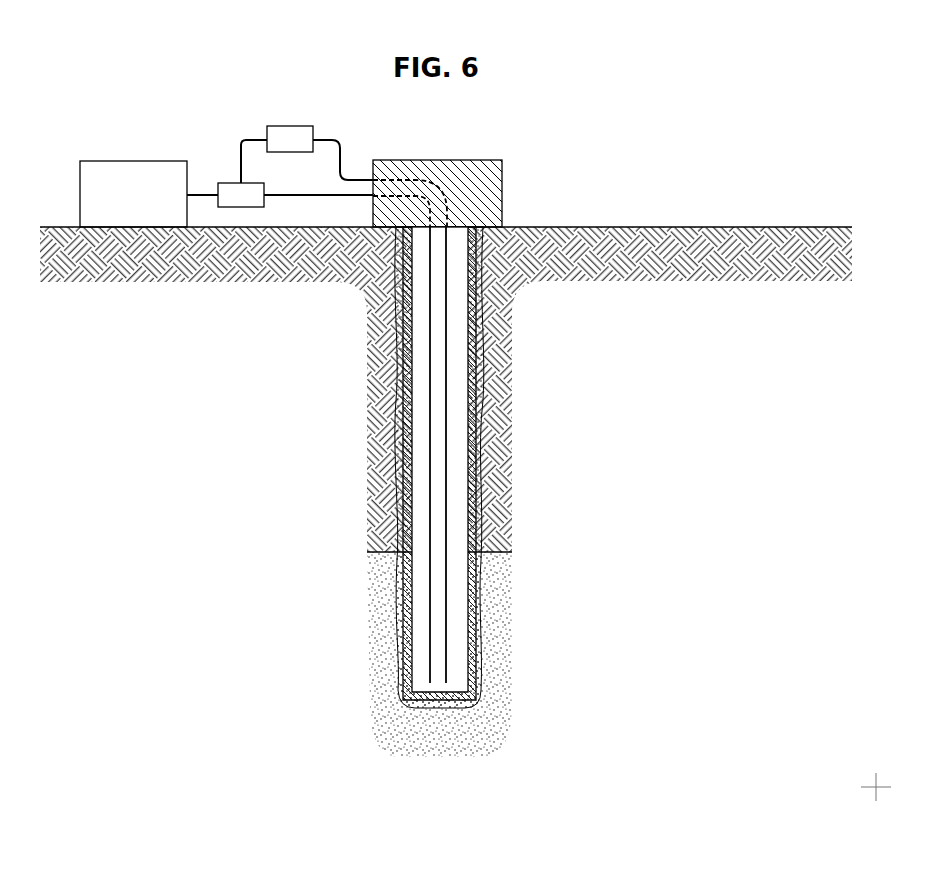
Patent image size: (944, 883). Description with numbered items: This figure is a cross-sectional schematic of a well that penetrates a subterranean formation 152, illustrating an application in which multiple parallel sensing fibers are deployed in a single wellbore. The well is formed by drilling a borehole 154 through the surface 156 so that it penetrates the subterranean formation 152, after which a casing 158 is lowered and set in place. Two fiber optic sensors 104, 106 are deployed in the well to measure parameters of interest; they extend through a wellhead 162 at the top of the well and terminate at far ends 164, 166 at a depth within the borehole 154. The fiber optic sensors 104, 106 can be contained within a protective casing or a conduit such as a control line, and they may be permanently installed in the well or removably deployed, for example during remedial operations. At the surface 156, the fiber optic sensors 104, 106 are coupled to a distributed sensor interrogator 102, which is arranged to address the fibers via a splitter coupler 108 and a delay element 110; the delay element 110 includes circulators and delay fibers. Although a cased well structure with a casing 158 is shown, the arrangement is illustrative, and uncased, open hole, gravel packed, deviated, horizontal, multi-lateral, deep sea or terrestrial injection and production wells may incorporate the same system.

The distributed sensor interrogator 102 is at (151, 206).
The fiber optic sensor 104 is at (352, 197).
The fiber optic sensor 106 is at (340, 150).
The splitter coupler 108 is at (226, 183).
The delay element 110 is at (288, 126).
The subterranean formation 152 is at (456, 741).
The borehole 154 is at (397, 393).
The surface 156 is at (756, 227).
The casing 158 is at (476, 592).
The wellhead 162 is at (471, 160).
The far end 164 is at (427, 667).
The far end 166 is at (452, 675).